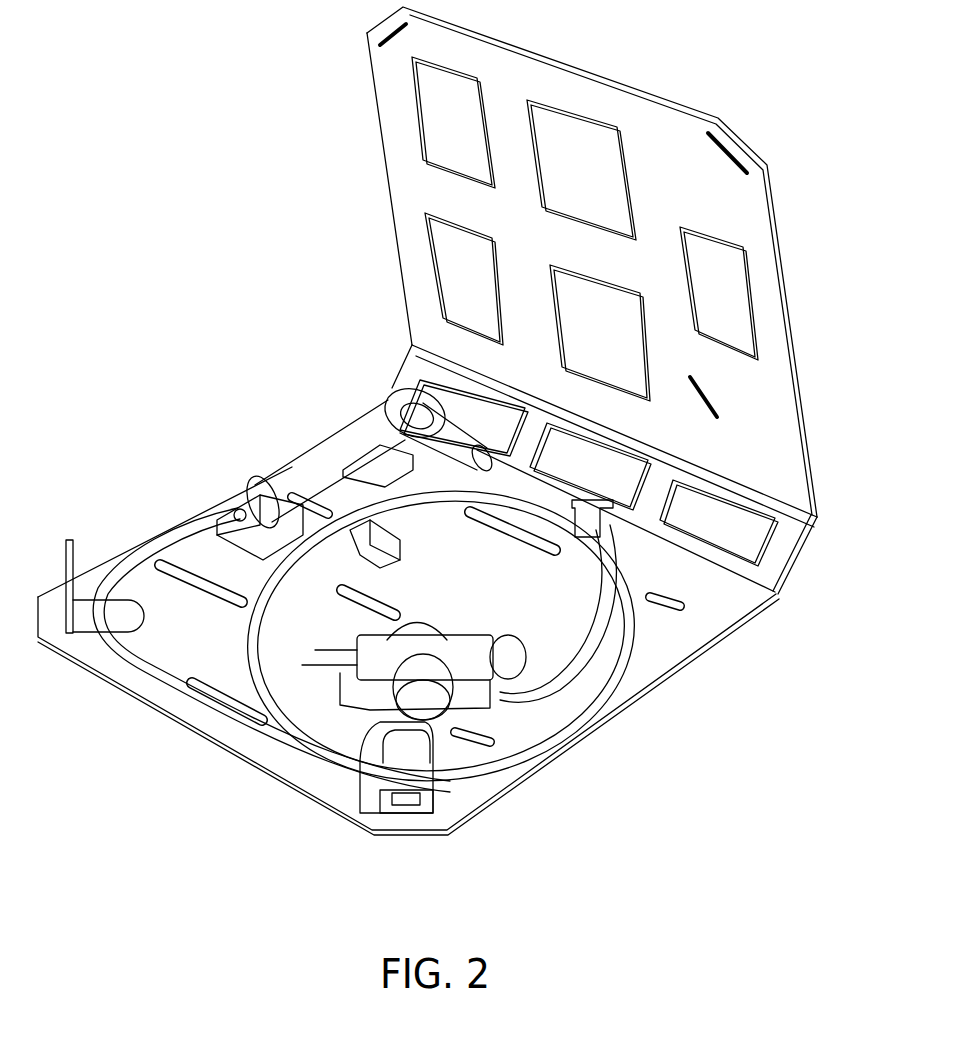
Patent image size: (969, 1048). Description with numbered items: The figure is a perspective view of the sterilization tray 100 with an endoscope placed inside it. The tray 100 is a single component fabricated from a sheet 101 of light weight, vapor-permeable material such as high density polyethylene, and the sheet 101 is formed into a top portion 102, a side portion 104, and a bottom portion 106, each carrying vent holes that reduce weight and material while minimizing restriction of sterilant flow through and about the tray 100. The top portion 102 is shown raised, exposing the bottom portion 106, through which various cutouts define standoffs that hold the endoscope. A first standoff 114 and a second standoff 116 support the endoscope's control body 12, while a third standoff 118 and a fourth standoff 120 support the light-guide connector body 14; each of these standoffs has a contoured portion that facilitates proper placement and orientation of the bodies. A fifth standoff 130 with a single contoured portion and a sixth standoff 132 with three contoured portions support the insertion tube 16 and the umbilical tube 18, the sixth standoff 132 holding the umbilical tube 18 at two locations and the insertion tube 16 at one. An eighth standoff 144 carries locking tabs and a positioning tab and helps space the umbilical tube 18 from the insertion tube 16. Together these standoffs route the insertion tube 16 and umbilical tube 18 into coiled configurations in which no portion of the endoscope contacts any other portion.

The tray 100 is at (163, 112).
The top portion 102 is at (782, 257).
The side portion 104 is at (800, 555).
The sheet 101 is at (742, 607).
The bottom portion 106 is at (665, 680).
The control body 12 is at (330, 447).
The first standoff 114 is at (236, 511).
The second standoff 116 is at (387, 407).
The sixth standoff 132 is at (600, 507).
The fifth standoff 130 is at (393, 553).
The insertion tube 16 is at (145, 668).
The umbilical tube 18 is at (295, 733).
The third standoff 118 is at (377, 703).
The eighth standoff 144 is at (420, 753).
The light-guide connector body 14 is at (480, 672).
The fourth standoff 120 is at (500, 688).